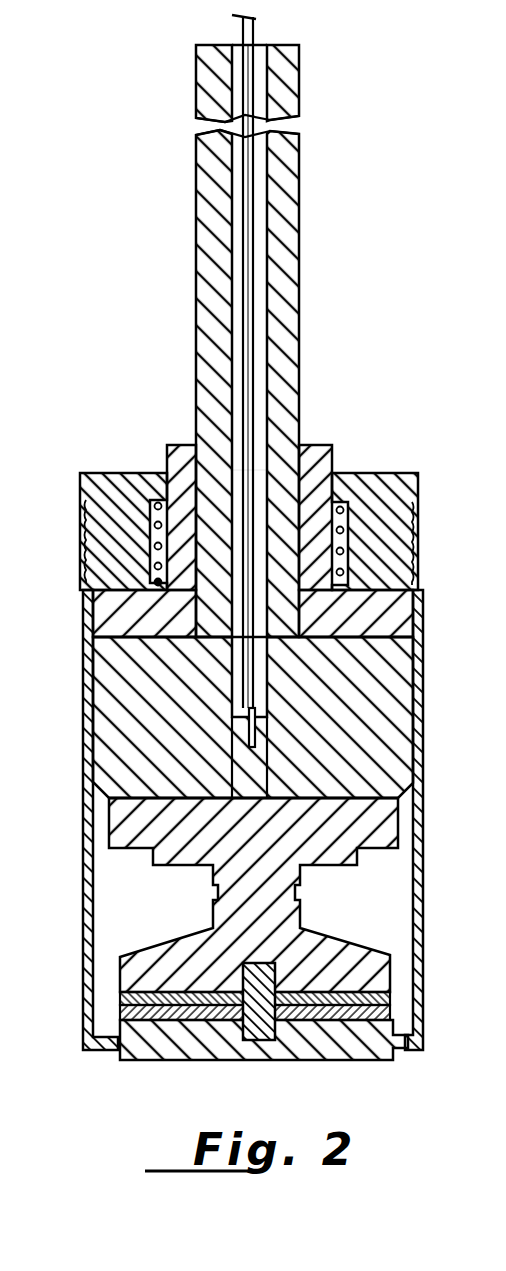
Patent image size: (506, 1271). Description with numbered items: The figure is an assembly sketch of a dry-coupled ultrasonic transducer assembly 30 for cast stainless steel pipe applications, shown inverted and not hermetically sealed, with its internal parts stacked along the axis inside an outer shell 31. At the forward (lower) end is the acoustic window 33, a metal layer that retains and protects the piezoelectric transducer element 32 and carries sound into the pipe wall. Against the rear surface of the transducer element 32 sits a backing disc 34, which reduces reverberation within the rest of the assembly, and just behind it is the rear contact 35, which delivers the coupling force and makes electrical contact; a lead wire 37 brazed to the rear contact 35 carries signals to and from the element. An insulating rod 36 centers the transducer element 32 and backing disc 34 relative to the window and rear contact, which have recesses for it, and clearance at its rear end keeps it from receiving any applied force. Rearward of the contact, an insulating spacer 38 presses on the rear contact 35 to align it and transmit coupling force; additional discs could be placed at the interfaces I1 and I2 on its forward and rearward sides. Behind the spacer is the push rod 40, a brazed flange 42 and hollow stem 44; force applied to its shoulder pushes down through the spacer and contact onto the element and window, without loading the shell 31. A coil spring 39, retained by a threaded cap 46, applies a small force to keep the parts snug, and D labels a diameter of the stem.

The dry-coupled transducer assembly 30 is at (472, 558).
The outer shell 31 is at (86, 823).
The transducer element 32 is at (125, 1008).
The acoustic window 33 is at (150, 1060).
The backing disc 34 is at (125, 1005).
The rear contact 35 is at (186, 941).
The insulating rod 36 is at (253, 1038).
The lead wire 37 is at (245, 665).
The insulating spacer 38 is at (120, 723).
The coil spring 39 is at (157, 527).
The push rod 40 is at (332, 462).
The push rod flange 42 is at (118, 620).
The module stem 44 is at (210, 263).
The threaded cap 46 is at (93, 477).
The diameter D is at (197, 477).
The forward interface I1 is at (426, 798).
The rearward interface I2 is at (426, 634).